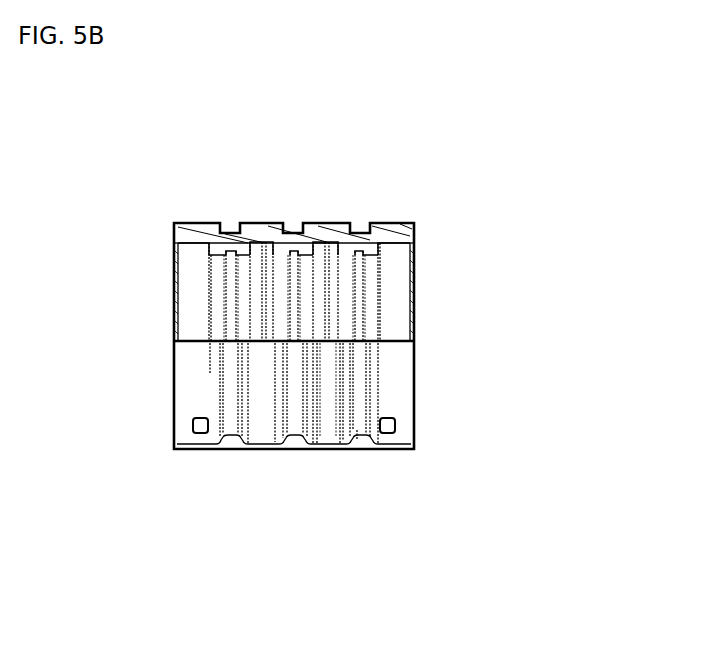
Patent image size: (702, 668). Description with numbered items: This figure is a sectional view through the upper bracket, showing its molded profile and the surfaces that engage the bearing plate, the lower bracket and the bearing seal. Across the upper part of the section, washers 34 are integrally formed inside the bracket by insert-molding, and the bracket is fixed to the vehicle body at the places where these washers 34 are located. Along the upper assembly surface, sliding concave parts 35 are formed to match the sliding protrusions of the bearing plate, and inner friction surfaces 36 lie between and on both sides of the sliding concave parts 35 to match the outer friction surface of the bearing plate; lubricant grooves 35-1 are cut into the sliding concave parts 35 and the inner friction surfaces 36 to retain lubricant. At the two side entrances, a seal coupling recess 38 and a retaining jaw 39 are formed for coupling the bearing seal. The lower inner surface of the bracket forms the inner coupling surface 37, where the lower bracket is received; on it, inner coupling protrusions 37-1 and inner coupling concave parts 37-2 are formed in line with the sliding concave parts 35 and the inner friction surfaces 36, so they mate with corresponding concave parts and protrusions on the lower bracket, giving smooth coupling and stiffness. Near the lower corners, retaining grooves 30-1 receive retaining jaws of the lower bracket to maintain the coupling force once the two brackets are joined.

The washer 34 is at (229, 222).
The lubricant groove 35-1 is at (302, 258).
The retaining jaw 39 is at (174, 260).
The seal coupling recess 38 is at (176, 274).
The sliding concave part 35 is at (294, 262).
The inner friction surface 36 is at (296, 306).
The inner coupling surface 37 is at (387, 387).
The retaining groove 30-1 is at (397, 425).
The inner coupling protrusion 37-1 is at (357, 440).
The inner coupling concave part 37-2 is at (330, 428).